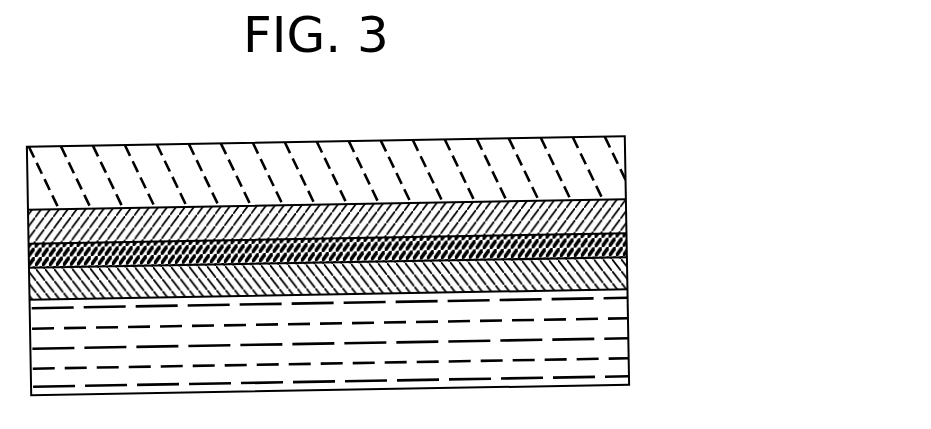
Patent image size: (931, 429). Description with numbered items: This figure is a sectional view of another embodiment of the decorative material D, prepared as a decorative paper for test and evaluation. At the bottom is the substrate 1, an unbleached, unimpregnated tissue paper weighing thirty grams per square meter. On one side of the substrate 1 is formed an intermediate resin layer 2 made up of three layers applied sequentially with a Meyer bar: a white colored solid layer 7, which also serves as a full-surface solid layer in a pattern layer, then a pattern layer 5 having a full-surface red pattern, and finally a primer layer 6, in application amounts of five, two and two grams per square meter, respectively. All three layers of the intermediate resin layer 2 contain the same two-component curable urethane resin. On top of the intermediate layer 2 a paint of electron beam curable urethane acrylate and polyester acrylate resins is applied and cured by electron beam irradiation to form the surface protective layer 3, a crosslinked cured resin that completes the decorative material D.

The decorative material D is at (647, 110).
The substrate 1 is at (607, 316).
The intermediate resin layer 2 is at (810, 181).
The surface protective layer 3 is at (600, 168).
The pattern layer 5 is at (627, 242).
The primer layer 6 is at (603, 218).
The white colored solid layer 7 is at (628, 266).